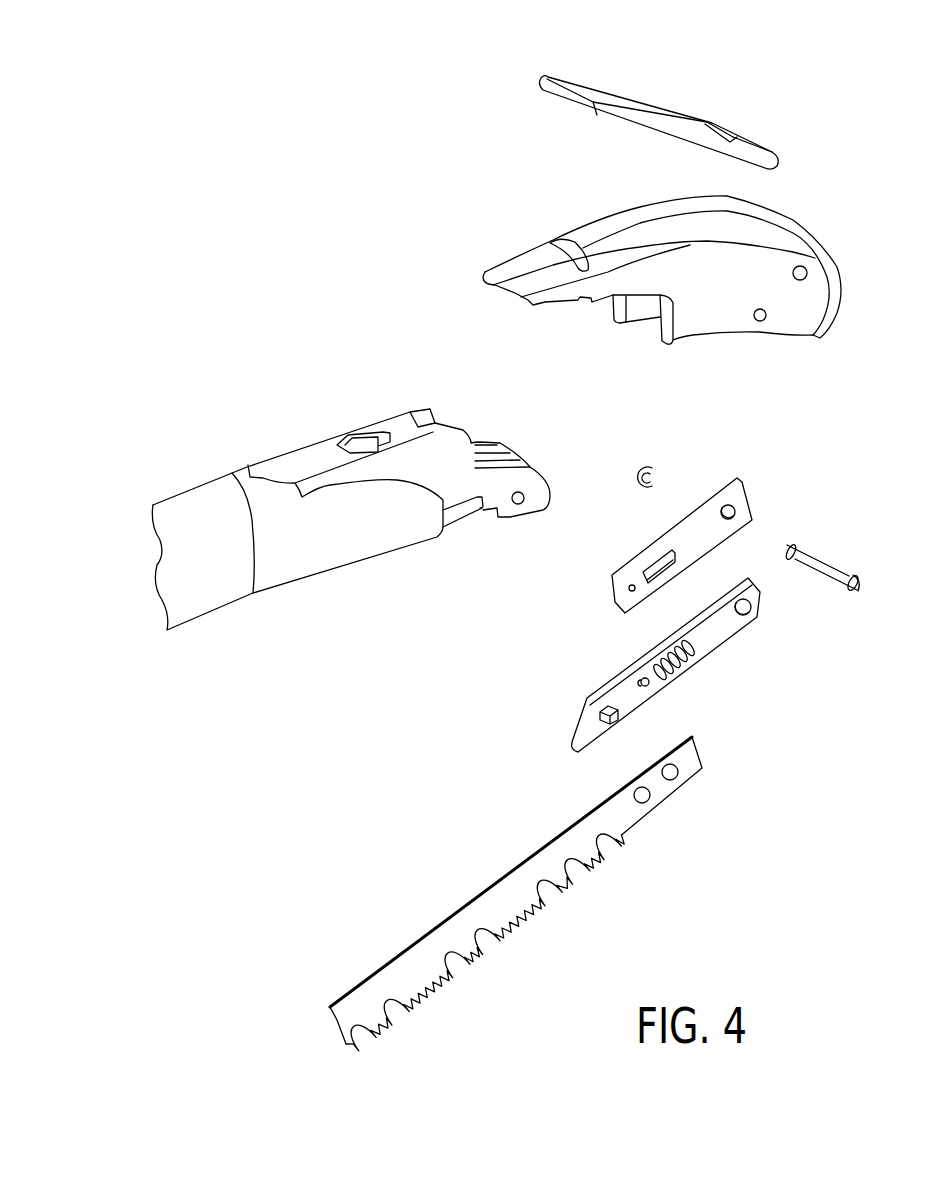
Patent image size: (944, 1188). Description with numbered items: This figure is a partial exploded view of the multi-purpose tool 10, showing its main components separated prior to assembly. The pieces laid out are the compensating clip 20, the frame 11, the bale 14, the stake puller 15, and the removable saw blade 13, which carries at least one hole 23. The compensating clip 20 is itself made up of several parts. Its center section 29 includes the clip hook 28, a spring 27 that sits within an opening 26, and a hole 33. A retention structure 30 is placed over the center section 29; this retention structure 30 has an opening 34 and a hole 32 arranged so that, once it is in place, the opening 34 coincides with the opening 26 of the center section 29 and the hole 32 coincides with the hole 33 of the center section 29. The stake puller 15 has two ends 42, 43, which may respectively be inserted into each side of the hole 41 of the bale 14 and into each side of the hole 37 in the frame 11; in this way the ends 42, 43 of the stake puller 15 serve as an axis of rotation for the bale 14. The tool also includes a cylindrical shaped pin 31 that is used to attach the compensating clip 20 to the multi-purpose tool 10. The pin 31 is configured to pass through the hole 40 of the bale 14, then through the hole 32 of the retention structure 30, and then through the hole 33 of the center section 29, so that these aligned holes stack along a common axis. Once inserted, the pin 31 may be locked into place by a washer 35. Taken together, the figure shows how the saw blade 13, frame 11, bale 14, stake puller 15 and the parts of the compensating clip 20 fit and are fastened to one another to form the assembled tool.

The multi-purpose tool 10 is at (222, 695).
The frame 11 is at (175, 497).
The removable saw blade 13 is at (478, 963).
The bale 14 is at (820, 240).
The stake puller 15 is at (623, 98).
The compensating clip 20 is at (787, 602).
The hole 23 is at (645, 803).
The opening 26 is at (658, 675).
The spring 27 is at (680, 670).
The clip hook 28 is at (610, 722).
The center section 29 is at (653, 650).
The retention structure 30 is at (682, 523).
The cylindrical shaped pin 31 is at (835, 556).
The hole 32 is at (735, 508).
The hole 33 is at (748, 607).
The opening 34 is at (660, 567).
The washer 35 is at (655, 466).
The hole 37 is at (518, 506).
The hole 40 is at (803, 280).
The hole 41 is at (760, 322).
The end 42 is at (743, 143).
The end 43 is at (737, 136).